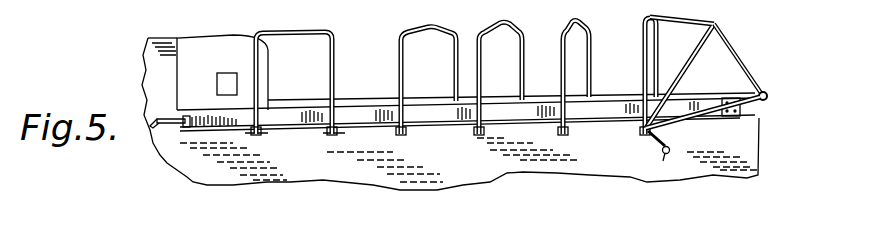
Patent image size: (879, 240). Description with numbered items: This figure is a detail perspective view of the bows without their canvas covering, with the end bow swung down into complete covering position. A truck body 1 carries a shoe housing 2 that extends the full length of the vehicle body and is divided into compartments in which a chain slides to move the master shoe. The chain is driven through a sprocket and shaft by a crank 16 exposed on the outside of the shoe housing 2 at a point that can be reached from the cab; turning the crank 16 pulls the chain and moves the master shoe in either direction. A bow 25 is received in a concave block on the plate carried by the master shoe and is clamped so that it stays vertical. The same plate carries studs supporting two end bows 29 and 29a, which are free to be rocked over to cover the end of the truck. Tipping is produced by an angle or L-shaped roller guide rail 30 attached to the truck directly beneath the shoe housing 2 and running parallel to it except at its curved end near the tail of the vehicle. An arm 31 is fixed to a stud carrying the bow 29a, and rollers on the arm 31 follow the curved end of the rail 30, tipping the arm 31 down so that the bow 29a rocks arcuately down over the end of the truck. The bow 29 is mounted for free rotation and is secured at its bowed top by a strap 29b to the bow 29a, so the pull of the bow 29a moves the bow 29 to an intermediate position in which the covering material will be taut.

The truck body 1 is at (395, 182).
The shoe housing 2 is at (588, 112).
The crank 16 is at (155, 127).
The bow 25 is at (638, 27).
The end bow 29 is at (717, 30).
The end bow 29a is at (750, 107).
The strap 29b is at (737, 53).
The roller guide rail 30 is at (457, 128).
The arm 31 is at (643, 133).